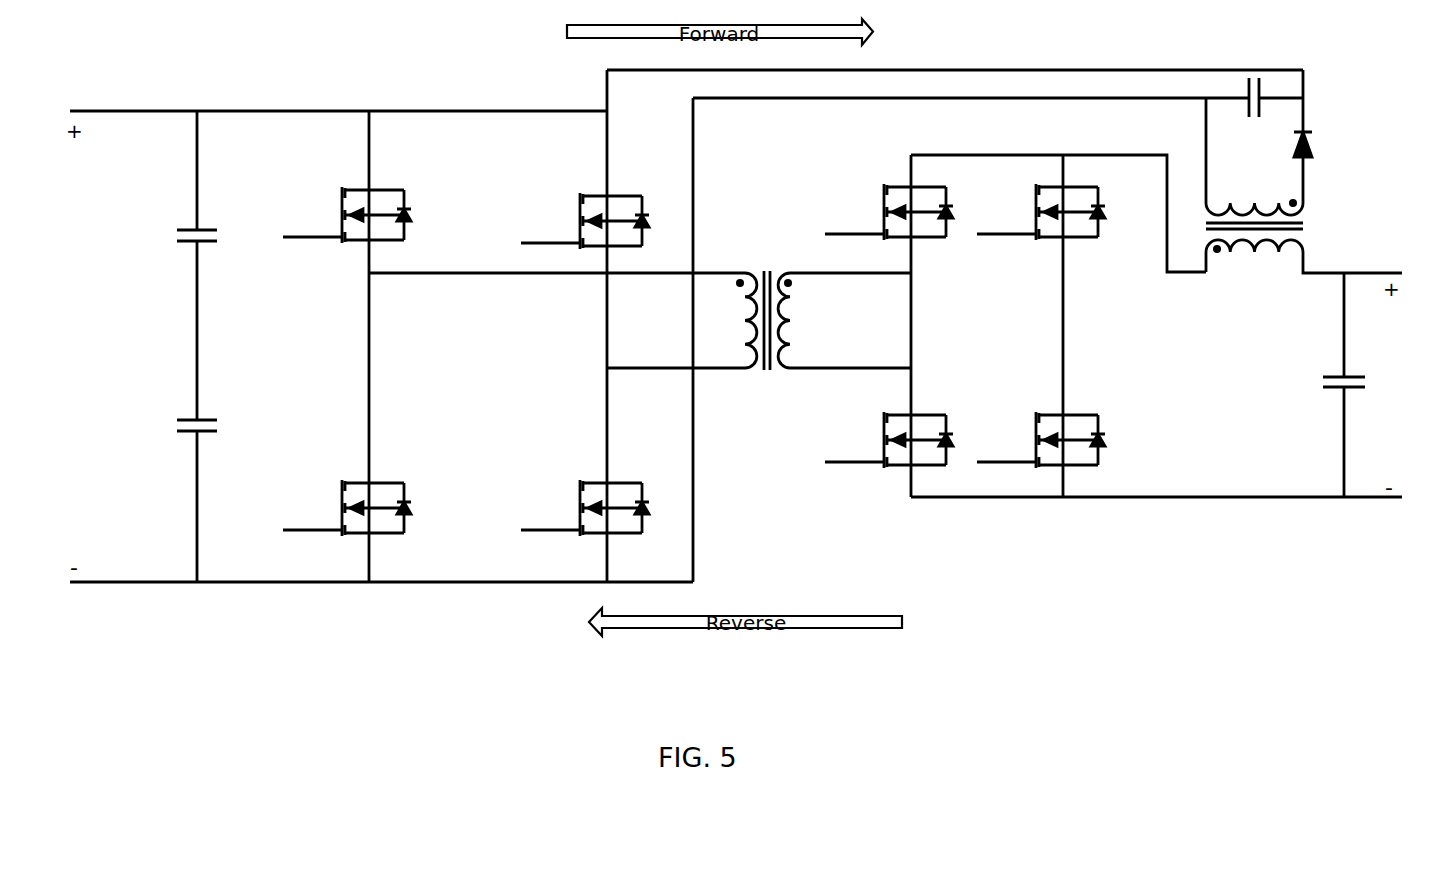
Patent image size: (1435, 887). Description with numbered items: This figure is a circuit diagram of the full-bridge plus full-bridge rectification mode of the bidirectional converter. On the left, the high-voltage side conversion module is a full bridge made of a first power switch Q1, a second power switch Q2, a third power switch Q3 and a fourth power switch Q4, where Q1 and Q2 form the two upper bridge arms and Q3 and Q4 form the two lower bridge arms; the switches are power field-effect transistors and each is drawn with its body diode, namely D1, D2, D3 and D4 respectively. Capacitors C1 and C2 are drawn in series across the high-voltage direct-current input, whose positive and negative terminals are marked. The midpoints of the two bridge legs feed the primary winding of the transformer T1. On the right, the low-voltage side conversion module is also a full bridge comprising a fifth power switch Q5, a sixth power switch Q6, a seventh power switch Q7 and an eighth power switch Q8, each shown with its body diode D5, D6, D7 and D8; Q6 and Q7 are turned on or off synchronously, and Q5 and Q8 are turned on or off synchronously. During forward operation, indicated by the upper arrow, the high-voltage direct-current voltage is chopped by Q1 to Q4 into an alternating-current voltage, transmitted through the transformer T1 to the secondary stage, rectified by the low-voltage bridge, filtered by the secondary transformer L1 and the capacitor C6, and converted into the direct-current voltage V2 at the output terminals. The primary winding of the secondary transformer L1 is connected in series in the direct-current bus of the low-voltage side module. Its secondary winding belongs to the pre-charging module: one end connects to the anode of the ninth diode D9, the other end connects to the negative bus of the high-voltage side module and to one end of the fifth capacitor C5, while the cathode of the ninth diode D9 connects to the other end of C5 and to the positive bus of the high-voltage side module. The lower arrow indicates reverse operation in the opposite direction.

The first power switch Q1 is at (343, 208).
The second power switch Q2 is at (581, 213).
The third power switch Q3 is at (343, 499).
The fourth power switch Q4 is at (581, 499).
The fifth power switch Q5 is at (885, 431).
The sixth power switch Q6 is at (1046, 424).
The seventh power switch Q7 is at (885, 205).
The eighth power switch Q8 is at (1046, 197).
The body diode D1 is at (424, 215).
The body diode D2 is at (662, 221).
The body diode D3 is at (425, 508).
The body diode D4 is at (662, 508).
The body diode D5 is at (965, 440).
The body diode D6 is at (1117, 440).
The body diode D7 is at (965, 212).
The body diode D8 is at (1117, 212).
The ninth diode D9 is at (1324, 146).
The capacitor C1 is at (215, 265).
The capacitor C2 is at (215, 497).
The fifth capacitor C5 is at (1238, 109).
The capacitor C6 is at (1328, 385).
The transformer T1 is at (764, 305).
The secondary transformer L1 is at (1240, 226).
The direct-current voltage V2 is at (1372, 385).